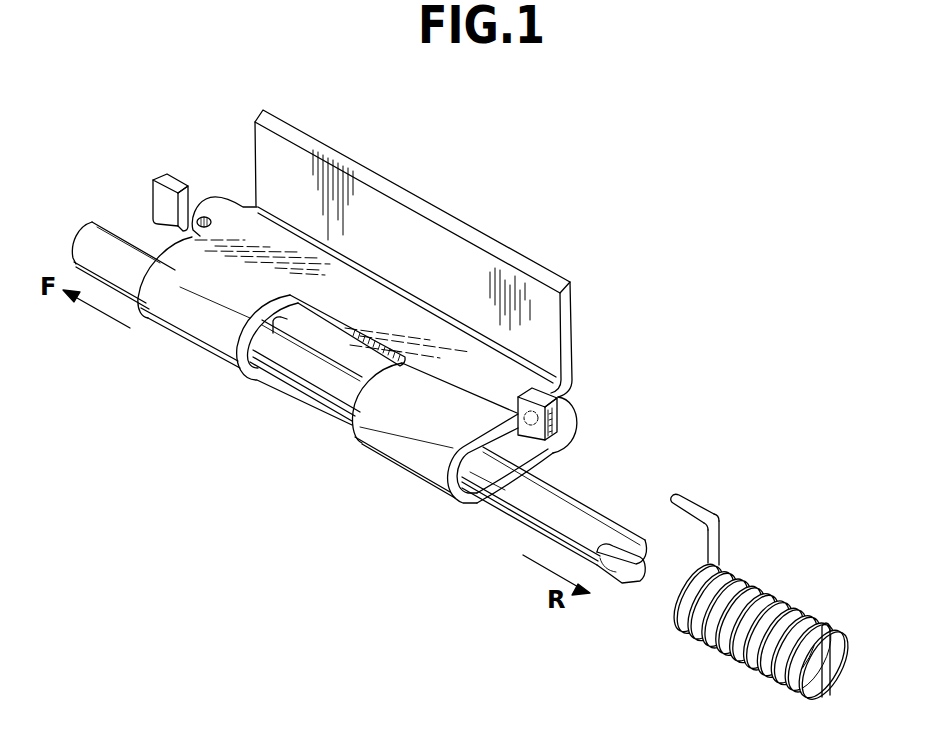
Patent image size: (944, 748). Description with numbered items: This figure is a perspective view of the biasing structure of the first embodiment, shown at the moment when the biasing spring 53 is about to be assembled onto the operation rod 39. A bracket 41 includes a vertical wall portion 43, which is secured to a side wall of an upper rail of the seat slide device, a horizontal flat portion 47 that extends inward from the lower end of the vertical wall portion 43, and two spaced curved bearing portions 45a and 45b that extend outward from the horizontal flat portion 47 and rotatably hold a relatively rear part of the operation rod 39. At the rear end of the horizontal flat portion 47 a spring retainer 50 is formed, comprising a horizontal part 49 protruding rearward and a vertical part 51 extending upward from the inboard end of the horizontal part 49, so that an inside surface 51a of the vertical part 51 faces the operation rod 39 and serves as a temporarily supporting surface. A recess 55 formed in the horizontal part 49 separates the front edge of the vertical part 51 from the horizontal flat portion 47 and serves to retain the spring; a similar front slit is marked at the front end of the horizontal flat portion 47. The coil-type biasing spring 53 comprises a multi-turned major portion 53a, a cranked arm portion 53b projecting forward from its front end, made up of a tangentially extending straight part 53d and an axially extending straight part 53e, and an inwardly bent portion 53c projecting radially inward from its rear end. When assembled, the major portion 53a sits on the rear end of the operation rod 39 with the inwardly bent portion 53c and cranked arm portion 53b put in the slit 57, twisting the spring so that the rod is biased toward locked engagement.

The operation rod 39 is at (497, 493).
The bracket 41 is at (577, 337).
The vertical wall portion 43 is at (472, 272).
The curved bearing portion 45a is at (186, 345).
The curved bearing portion 45b is at (400, 447).
The horizontal flat portion 47 is at (337, 287).
The horizontal part 49 is at (567, 420).
The spring retainer 50 is at (537, 384).
The vertical part 51 is at (556, 412).
The inside surface 51a is at (552, 457).
The biasing spring 53 is at (798, 588).
The multi-turned major portion 53a is at (773, 602).
The cranked arm portion 53b is at (721, 513).
The inwardly bent portion 53c is at (830, 658).
The tangentially extending straight part 53d is at (721, 546).
The axially extending straight part 53e is at (698, 503).
The recess 55 is at (203, 214).
The slit 57 is at (612, 570).